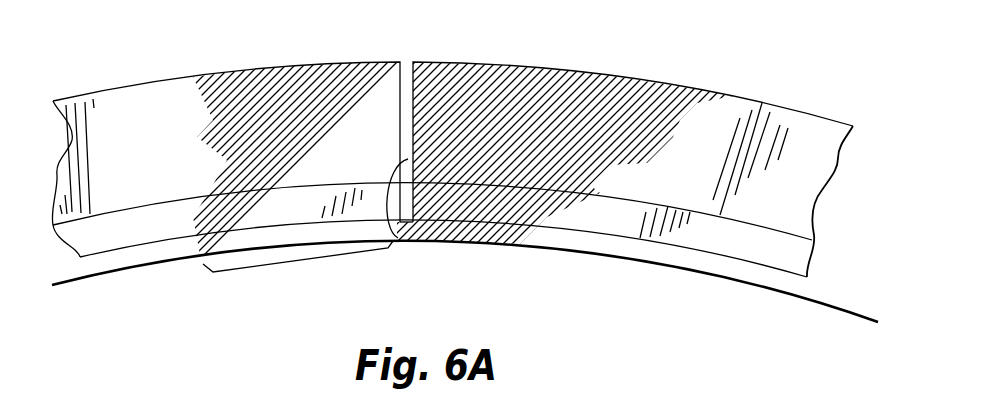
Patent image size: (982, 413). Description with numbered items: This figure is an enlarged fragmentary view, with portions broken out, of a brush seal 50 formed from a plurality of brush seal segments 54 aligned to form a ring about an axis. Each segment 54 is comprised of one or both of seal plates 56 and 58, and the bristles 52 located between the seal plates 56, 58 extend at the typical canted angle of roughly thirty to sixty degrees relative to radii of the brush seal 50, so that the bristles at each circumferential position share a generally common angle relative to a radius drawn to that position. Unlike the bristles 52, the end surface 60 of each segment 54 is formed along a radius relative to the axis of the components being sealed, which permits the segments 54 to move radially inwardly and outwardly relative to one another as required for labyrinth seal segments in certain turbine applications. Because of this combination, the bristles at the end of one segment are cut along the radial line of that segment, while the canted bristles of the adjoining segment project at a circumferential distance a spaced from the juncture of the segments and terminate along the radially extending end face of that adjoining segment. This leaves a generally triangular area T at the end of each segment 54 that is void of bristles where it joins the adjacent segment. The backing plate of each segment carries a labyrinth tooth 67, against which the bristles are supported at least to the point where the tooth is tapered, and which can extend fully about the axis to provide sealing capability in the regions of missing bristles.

The brush seal 50 is at (592, 82).
The bristles 52 is at (230, 86).
The brush seal segment 54 is at (805, 222).
The seal plate 56 is at (637, 192).
The seal plate 58 is at (567, 227).
The end surface 60 is at (397, 238).
The labyrinth tooth 67 is at (757, 253).
The triangular area T is at (263, 218).
The circumferential distance a is at (305, 284).